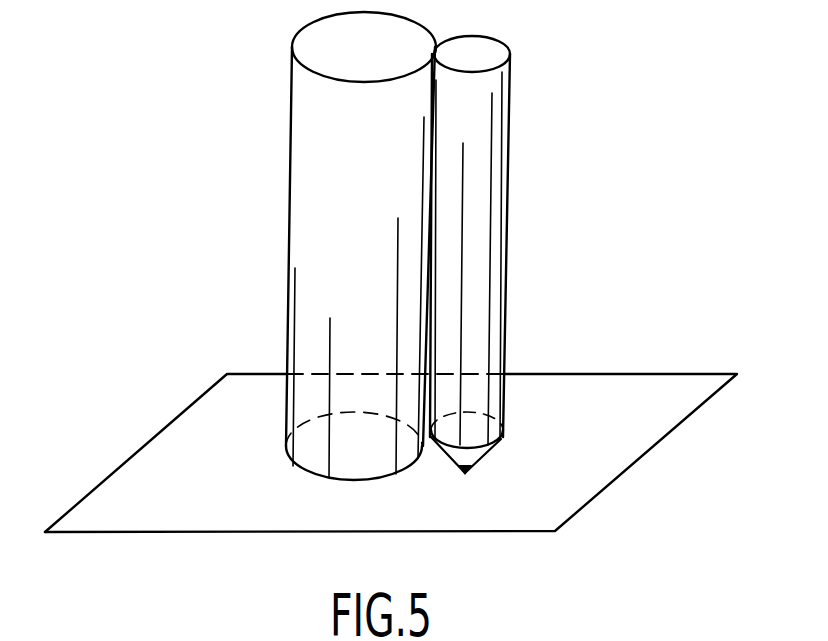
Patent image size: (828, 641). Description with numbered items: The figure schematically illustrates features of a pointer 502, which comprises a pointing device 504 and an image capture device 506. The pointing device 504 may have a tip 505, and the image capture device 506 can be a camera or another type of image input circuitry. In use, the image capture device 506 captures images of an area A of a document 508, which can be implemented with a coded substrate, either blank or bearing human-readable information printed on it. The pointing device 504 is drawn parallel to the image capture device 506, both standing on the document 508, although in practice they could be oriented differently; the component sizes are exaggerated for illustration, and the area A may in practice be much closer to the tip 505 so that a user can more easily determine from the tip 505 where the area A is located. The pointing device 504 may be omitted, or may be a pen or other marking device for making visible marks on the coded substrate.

The pointer 502 is at (553, 66).
The pointing device 504 is at (492, 234).
The tip 505 is at (465, 476).
The image capture device 506 is at (315, 209).
The document 508 is at (612, 479).